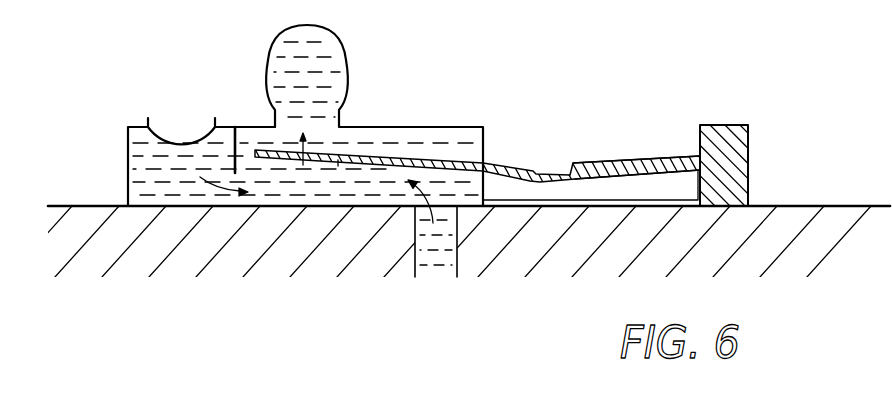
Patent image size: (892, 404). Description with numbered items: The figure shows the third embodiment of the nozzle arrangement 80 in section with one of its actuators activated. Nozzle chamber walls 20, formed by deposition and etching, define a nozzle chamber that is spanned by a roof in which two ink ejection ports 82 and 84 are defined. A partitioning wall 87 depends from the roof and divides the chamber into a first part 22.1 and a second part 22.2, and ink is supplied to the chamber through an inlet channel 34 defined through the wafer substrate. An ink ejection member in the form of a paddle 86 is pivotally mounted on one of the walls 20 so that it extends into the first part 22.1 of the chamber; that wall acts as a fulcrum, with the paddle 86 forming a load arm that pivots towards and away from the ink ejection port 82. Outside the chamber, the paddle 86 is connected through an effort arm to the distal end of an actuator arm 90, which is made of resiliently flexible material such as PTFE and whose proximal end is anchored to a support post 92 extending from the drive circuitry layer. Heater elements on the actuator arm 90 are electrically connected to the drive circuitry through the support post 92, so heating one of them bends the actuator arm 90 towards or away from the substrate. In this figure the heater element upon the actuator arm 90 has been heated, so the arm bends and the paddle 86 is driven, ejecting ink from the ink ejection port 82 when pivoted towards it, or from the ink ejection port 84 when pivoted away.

The nozzle chamber walls 20 is at (488, 138).
The first part of the nozzle chamber 22.1 is at (433, 142).
The second part of the nozzle chamber 22.2 is at (150, 180).
The inlet channel 34 is at (442, 260).
The nozzle arrangement 80 is at (604, 96).
The ink ejection port 82 is at (322, 115).
The ink ejection port 84 is at (170, 132).
The paddle 86 is at (338, 166).
The partitioning wall 87 is at (229, 142).
The actuator arm 90 is at (635, 158).
The support post 92 is at (718, 125).